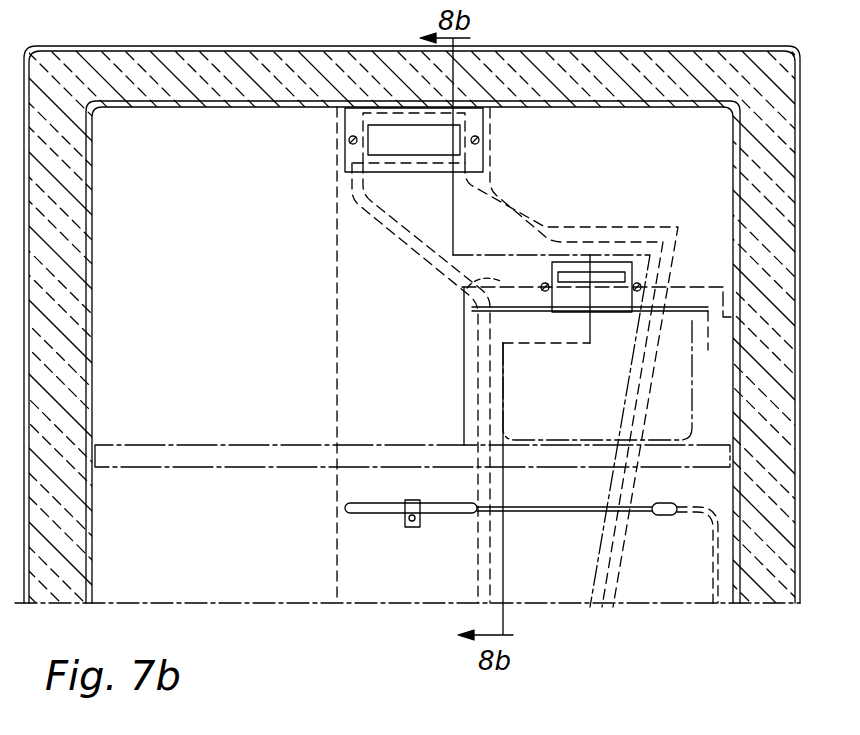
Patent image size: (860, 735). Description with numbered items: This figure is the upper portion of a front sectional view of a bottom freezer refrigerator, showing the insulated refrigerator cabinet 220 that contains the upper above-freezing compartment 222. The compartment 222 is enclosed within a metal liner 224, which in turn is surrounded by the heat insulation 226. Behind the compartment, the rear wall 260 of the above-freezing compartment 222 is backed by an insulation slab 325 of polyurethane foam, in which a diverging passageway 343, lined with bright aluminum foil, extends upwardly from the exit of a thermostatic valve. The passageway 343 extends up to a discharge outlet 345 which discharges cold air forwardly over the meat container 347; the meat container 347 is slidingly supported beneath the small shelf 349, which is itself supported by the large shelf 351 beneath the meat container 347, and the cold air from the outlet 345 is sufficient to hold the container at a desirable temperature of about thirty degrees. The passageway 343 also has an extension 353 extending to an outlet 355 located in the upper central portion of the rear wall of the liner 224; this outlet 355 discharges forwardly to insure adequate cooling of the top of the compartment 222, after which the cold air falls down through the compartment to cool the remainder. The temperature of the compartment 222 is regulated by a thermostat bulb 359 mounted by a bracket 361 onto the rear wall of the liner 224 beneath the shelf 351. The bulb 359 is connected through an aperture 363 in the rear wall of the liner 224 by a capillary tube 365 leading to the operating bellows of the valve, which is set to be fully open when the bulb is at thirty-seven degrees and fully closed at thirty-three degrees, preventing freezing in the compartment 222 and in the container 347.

The refrigerator cabinet 220 is at (698, 48).
The above-freezing compartment 222 is at (251, 320).
The metal liner 224 is at (93, 272).
The heat insulation 226 is at (65, 73).
The rear wall 260 is at (412, 578).
The insulation slab 325 is at (337, 387).
The diverging passageway 343 is at (593, 580).
The discharge outlet 345 is at (630, 285).
The meat container 347 is at (693, 372).
The small shelf 349 is at (462, 281).
The large shelf 351 is at (175, 466).
The extension 353 is at (444, 250).
The outlet 355 is at (370, 145).
The thermostat bulb 359 is at (365, 507).
The bracket 361 is at (405, 525).
The aperture 363 is at (665, 515).
The capillary tube 365 is at (582, 508).